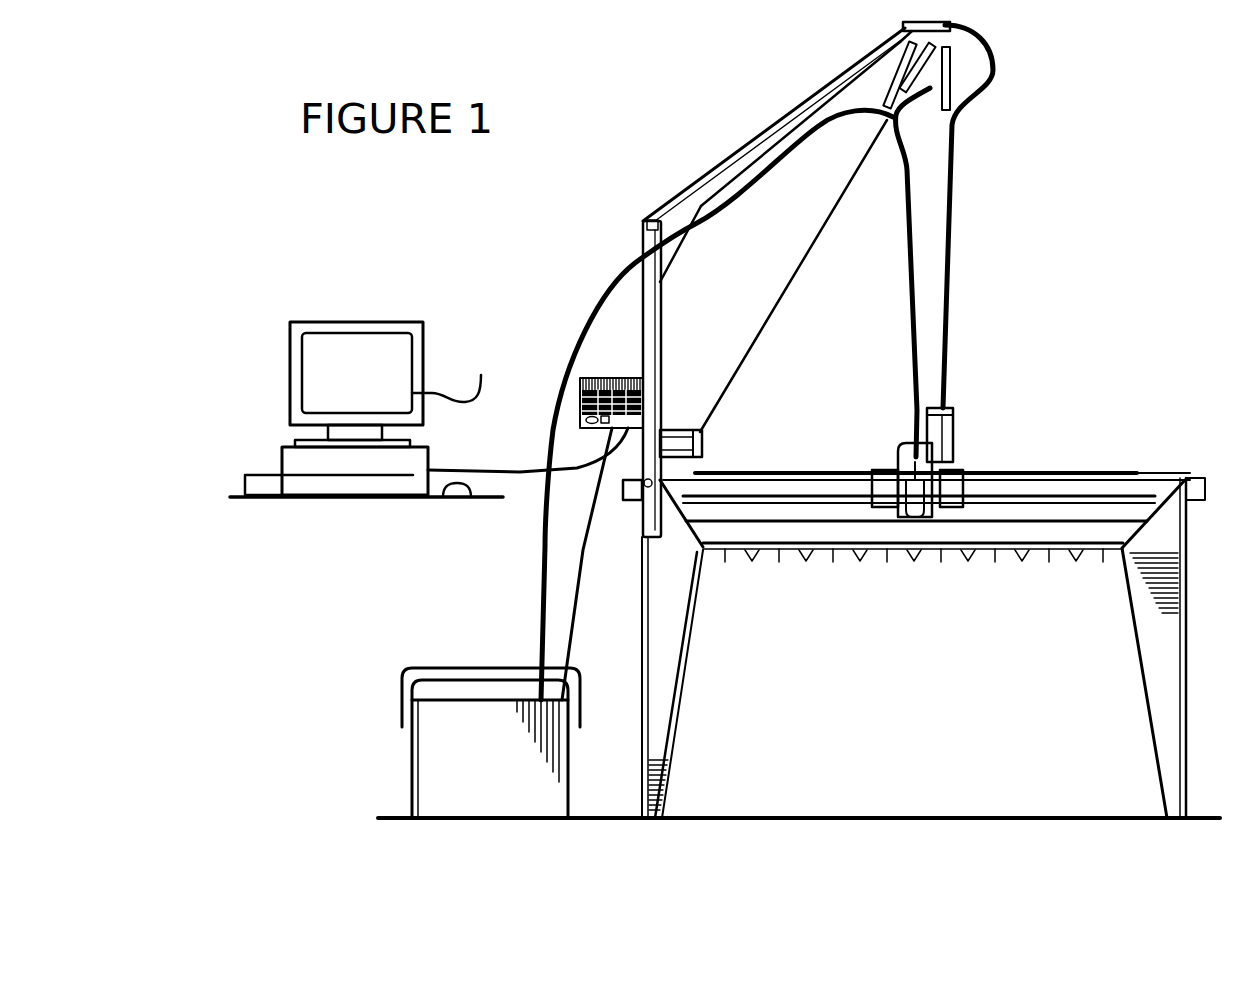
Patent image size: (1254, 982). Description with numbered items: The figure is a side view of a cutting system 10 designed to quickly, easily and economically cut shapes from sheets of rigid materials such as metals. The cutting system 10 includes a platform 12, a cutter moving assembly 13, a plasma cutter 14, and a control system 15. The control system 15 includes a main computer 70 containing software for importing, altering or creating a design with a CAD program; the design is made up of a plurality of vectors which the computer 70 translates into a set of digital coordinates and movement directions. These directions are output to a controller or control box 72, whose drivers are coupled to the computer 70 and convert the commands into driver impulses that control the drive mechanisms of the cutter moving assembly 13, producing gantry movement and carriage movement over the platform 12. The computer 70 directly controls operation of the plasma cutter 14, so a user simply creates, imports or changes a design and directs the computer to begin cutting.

The cutting system 10 is at (526, 222).
The platform 12 is at (1044, 457).
The cutter moving assembly 13 is at (886, 440).
The plasma cutter 14 is at (392, 787).
The control system 15 is at (375, 304).
The main computer 70 is at (447, 369).
The control box 72 is at (612, 378).